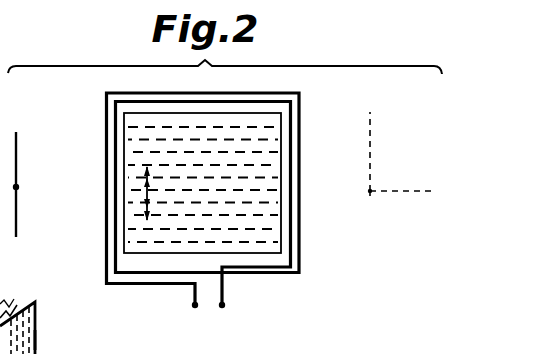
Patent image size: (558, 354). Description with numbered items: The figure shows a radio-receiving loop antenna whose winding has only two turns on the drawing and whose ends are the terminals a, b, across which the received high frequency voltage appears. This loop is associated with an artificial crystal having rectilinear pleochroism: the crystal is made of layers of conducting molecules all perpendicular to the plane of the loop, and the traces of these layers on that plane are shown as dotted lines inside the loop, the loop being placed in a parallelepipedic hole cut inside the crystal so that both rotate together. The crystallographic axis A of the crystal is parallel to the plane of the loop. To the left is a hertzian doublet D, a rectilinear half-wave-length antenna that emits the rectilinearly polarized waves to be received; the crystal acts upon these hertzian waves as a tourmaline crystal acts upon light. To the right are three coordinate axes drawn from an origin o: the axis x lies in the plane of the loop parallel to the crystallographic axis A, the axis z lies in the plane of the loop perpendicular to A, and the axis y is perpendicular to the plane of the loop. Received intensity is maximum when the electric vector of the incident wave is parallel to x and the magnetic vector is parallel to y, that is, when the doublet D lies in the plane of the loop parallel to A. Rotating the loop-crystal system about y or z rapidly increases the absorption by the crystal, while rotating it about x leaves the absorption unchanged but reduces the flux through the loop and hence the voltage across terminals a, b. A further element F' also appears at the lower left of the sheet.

The crystallographic axis A is at (153, 193).
The hertzian doublet D is at (17, 148).
The terminal a is at (195, 314).
The terminal b is at (224, 314).
The auxiliary element F' is at (28, 310).
The origin of coordinate axes o is at (364, 190).
The coordinate axis ox x is at (368, 143).
The coordinate axis oy y is at (370, 201).
The coordinate axis oz z is at (406, 195).